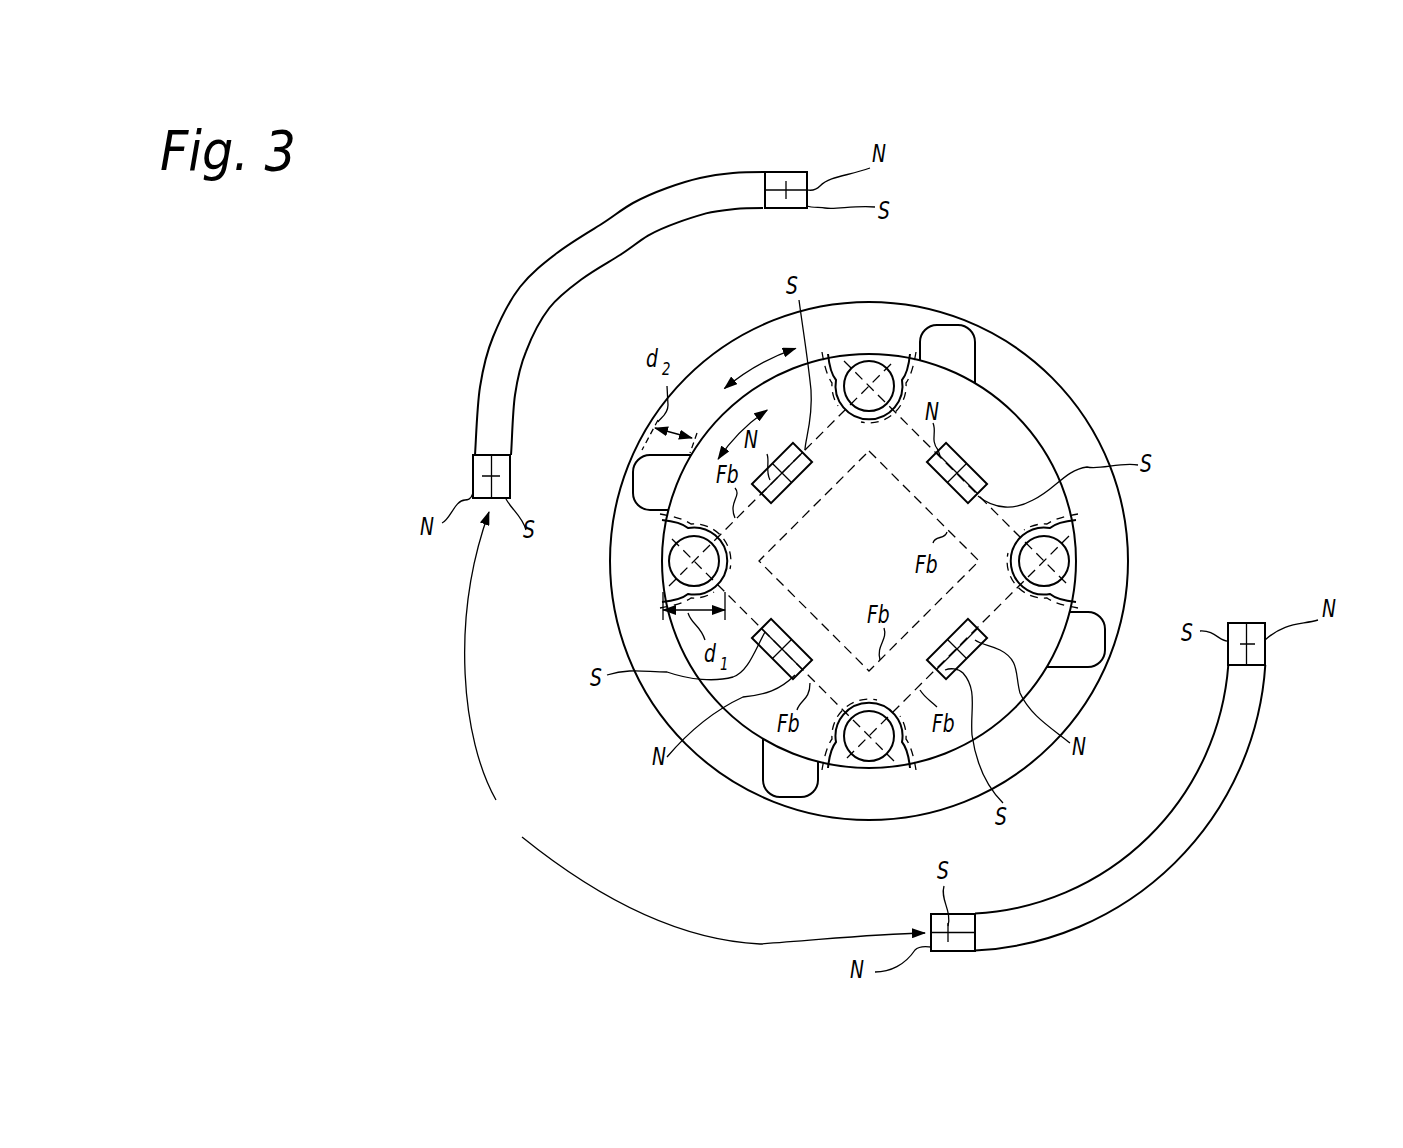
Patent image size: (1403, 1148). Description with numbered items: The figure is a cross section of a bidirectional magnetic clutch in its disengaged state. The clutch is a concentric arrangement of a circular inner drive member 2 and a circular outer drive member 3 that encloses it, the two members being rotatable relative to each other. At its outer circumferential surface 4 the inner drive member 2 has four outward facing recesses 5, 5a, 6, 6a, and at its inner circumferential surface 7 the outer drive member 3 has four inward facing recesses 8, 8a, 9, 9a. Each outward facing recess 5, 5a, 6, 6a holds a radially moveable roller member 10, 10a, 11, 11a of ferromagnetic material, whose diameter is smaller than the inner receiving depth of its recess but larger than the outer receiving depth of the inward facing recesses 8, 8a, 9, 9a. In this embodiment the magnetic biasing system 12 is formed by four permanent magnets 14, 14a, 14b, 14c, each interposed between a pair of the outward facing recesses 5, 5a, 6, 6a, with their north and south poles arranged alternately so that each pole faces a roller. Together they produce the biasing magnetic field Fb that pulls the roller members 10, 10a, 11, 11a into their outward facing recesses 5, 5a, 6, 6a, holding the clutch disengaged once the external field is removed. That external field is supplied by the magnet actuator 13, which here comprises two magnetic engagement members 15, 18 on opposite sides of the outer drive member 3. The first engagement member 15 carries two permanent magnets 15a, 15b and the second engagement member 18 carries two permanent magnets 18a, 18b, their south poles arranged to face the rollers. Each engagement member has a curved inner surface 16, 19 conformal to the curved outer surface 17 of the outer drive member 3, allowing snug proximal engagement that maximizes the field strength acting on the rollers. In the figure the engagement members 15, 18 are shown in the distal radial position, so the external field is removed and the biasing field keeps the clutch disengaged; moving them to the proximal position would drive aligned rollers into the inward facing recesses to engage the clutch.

The inner drive member 2 is at (1111, 458).
The outer drive member 3 is at (1002, 416).
The outer circumferential surface 4 is at (1056, 416).
The outward facing recess 5 is at (668, 530).
The outward facing recess 5a is at (897, 762).
The outward facing recess 6 is at (851, 354).
The outward facing recess 6a is at (1076, 520).
The inner circumferential surface 7 is at (1030, 436).
The inward facing recess 8 is at (648, 484).
The inward facing recess 8a is at (775, 783).
The inward facing recess 9 is at (962, 330).
The inward facing recess 9a is at (1085, 650).
The roller member 10 is at (690, 562).
The roller member 10a is at (866, 742).
The roller member 11 is at (872, 388).
The roller member 11a is at (1050, 562).
The magnetic biasing system 12 is at (928, 492).
The magnet actuator 13 is at (695, 728).
The permanent magnet 14 is at (778, 452).
The permanent magnet 14a is at (772, 659).
The permanent magnet 14b is at (967, 660).
The permanent magnet 14c is at (958, 450).
The magnetic engagement member 15 is at (558, 253).
The permanent magnet 15a is at (473, 470).
The permanent magnet 15b is at (788, 172).
The curved inner surface 16 is at (581, 281).
The curved outer surface 17 is at (753, 336).
The magnetic engagement member 18 is at (1190, 854).
The permanent magnet 18a is at (953, 951).
The permanent magnet 18b is at (1266, 657).
The curved inner surface 19 is at (1159, 831).